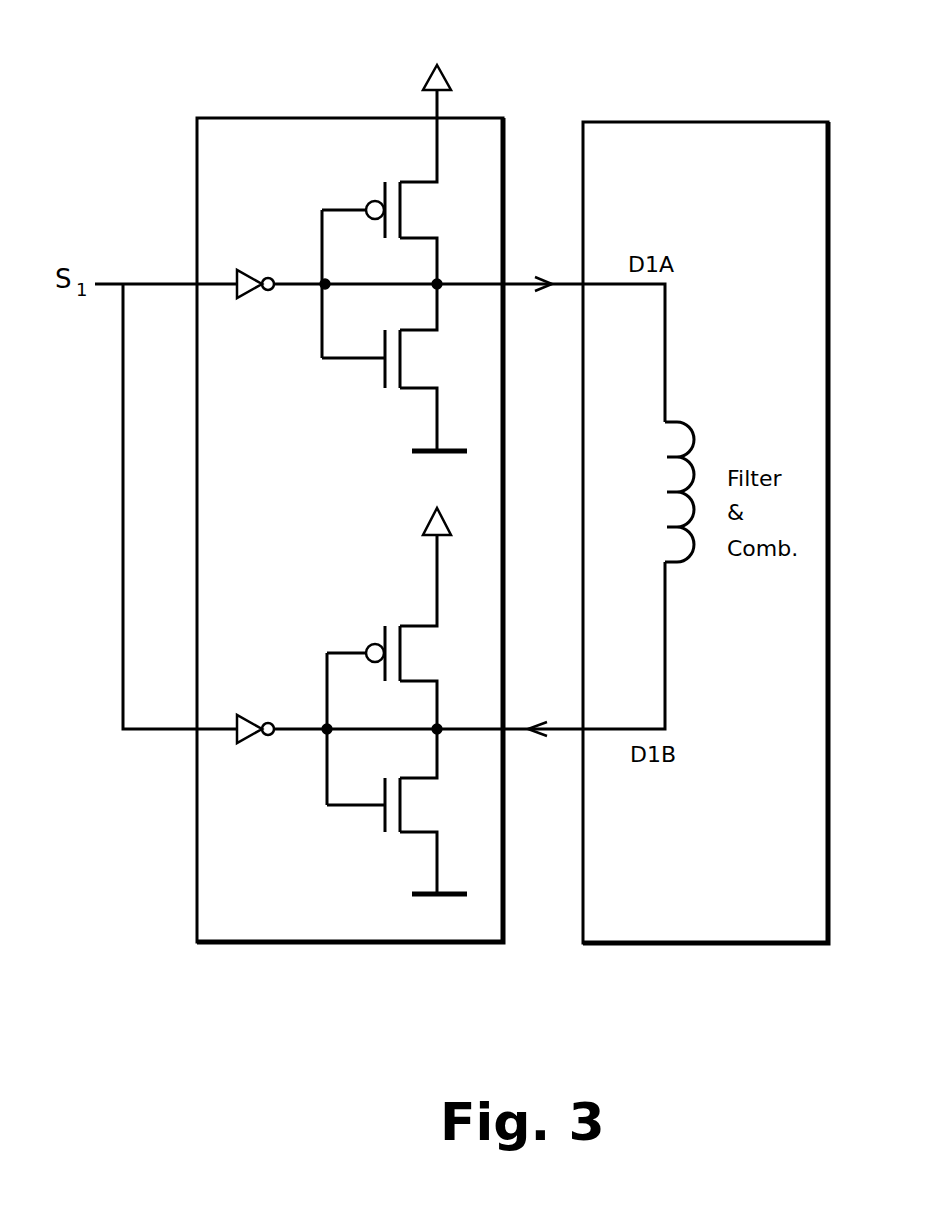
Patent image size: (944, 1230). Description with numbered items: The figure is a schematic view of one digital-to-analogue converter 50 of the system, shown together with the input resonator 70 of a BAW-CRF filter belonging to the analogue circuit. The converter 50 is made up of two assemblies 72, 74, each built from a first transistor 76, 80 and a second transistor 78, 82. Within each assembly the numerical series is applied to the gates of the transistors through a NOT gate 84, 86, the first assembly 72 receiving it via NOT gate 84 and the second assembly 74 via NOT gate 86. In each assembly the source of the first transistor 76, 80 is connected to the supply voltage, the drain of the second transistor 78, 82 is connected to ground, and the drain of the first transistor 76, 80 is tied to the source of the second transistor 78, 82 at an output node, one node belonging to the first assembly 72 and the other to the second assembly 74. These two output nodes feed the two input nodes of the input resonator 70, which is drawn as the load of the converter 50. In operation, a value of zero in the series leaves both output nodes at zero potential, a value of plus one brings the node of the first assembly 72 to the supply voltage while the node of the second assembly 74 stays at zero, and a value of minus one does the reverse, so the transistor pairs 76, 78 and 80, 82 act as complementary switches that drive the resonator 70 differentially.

The digital-to-analogue converter 50 is at (378, 118).
The input resonator 70 is at (667, 421).
The assembly 72 is at (396, 249).
The assembly 74 is at (367, 760).
The first transistor 76 is at (437, 189).
The second transistor 78 is at (437, 378).
The first transistor 80 is at (437, 636).
The second transistor 82 is at (437, 823).
The NOT gate 84 is at (248, 300).
The NOT gate 86 is at (259, 691).